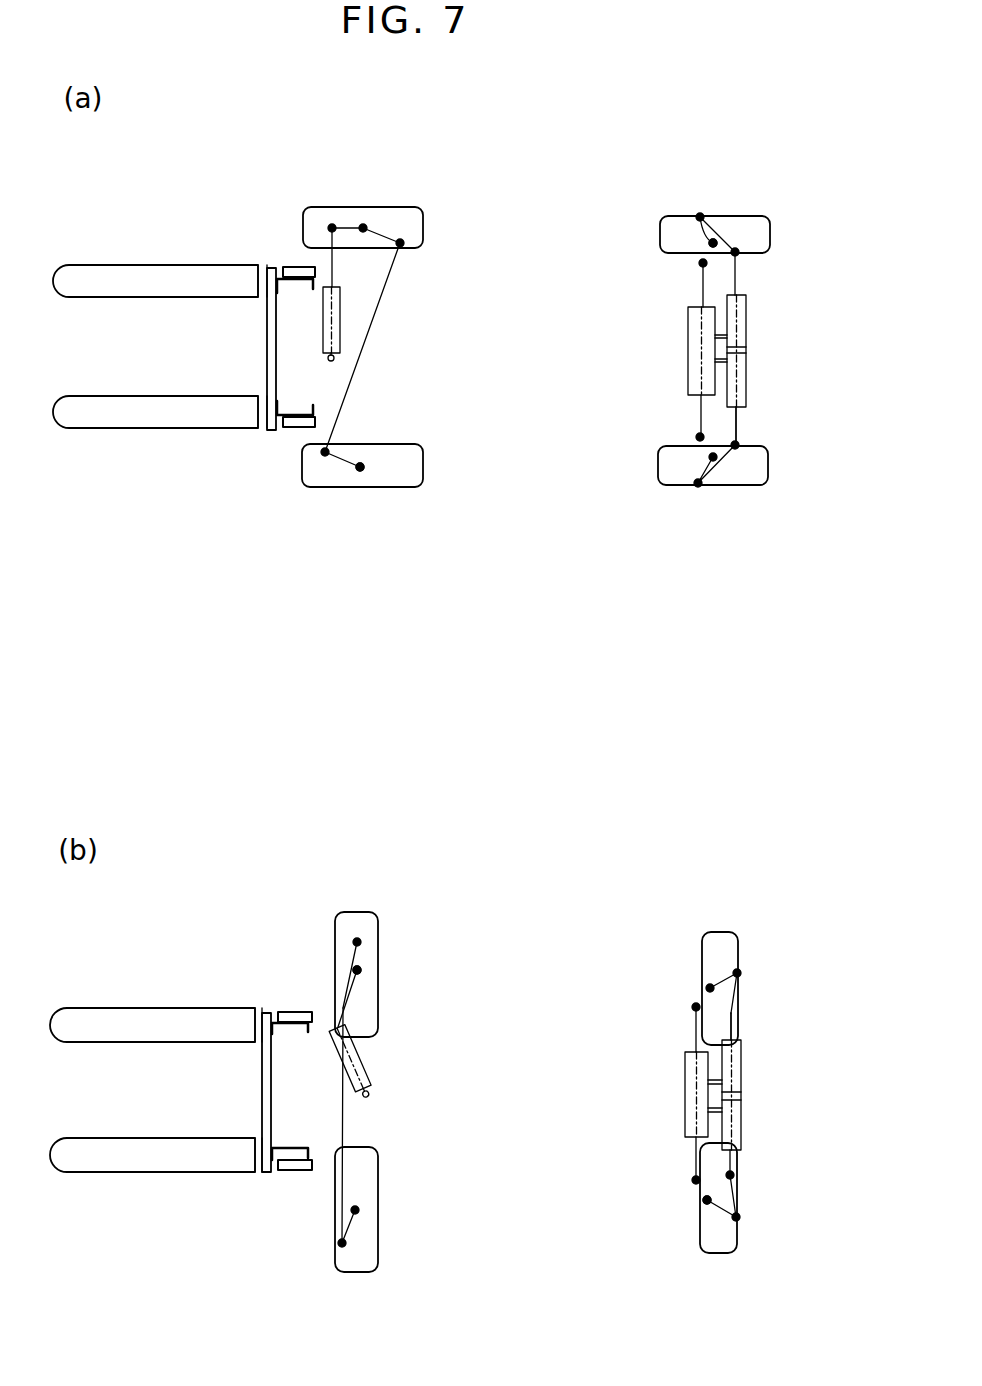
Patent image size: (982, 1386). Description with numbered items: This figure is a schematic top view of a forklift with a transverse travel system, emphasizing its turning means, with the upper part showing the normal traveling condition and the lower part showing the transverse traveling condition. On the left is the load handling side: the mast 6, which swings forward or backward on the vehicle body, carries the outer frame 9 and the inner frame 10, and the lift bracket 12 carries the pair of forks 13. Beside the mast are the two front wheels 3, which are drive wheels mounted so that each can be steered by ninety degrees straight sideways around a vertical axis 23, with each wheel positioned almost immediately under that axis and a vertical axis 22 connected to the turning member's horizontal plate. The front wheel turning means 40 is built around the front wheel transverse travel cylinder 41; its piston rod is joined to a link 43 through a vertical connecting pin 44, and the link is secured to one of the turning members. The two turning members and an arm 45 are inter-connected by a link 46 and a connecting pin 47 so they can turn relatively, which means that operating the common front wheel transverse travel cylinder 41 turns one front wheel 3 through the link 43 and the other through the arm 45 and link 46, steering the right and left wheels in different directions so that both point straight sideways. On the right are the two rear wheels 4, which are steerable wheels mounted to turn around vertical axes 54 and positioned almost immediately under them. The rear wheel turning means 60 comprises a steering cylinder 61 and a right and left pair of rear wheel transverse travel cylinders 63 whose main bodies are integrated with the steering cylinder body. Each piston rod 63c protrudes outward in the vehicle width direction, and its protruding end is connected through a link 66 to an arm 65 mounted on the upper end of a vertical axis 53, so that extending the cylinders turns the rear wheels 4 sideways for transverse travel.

The front wheel 3 is at (393, 213).
The rear wheel 4 is at (744, 215).
The mast 6 is at (283, 433).
The outer frame 9 is at (292, 267).
The inner frame 10 is at (290, 290).
The lift bracket 12 is at (267, 372).
The fork 13 is at (127, 412).
The vertical axis 22 is at (360, 470).
The vertical axis 23 is at (358, 718).
The front wheel turning means 40 is at (388, 332).
The front wheel transverse travel cylinder 41 is at (318, 323).
The link 43 is at (350, 226).
The connecting pin 44 is at (332, 224).
The arm 45 is at (403, 240).
The link 46 is at (358, 372).
The connecting pin 47 is at (402, 246).
The vertical axis 53 is at (712, 243).
The vertical axis 54 is at (710, 721).
The rear wheel turning means 60 is at (752, 320).
The steering cylinder 61 is at (684, 335).
The rear wheel transverse travel cylinder 63 is at (750, 362).
The piston rod 63c is at (738, 427).
The arm 65 is at (699, 215).
The link 66 is at (720, 462).